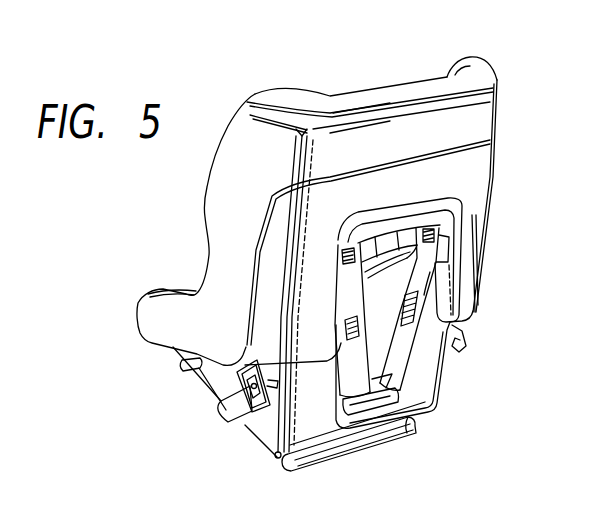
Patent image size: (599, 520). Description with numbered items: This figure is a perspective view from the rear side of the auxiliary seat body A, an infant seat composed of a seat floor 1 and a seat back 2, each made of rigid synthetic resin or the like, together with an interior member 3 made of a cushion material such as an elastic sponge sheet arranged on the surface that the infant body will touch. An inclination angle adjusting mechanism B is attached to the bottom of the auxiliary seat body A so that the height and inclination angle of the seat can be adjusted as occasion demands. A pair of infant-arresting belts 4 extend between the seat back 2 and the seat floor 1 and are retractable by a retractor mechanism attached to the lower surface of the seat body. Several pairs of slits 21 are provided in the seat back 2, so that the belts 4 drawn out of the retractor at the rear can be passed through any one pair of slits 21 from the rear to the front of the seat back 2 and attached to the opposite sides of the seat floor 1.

The seat floor 1 is at (262, 418).
The seat back 2 is at (464, 173).
The interior member 3 is at (477, 63).
The infant-arresting belts 4 is at (360, 378).
The slits 21 is at (407, 265).
The auxiliary seat body A is at (258, 82).
The inclination angle adjusting mechanism B is at (360, 446).